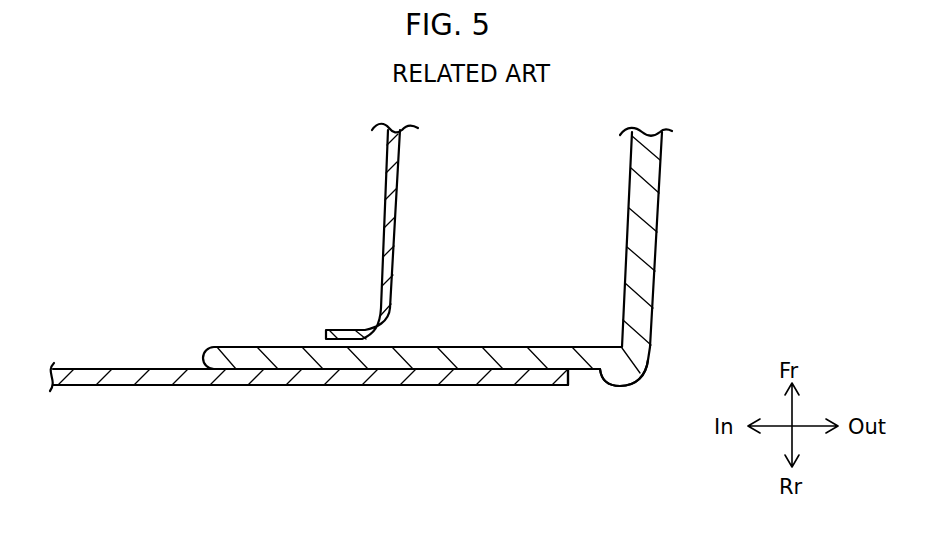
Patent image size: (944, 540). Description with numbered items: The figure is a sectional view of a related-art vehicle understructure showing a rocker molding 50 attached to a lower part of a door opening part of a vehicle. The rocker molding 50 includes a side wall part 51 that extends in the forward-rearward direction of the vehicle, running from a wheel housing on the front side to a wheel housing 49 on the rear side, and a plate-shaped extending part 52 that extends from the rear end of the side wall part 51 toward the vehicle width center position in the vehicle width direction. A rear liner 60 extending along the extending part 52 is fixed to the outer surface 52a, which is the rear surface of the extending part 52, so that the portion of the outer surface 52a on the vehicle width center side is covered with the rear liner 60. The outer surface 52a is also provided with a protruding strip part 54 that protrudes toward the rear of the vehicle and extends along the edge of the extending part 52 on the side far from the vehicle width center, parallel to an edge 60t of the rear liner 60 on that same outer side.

The wheel housing 49 is at (381, 217).
The rocker molding 50 is at (659, 256).
The side wall part 51 is at (651, 202).
The extending part 52 is at (385, 362).
The outer surface 52a is at (487, 367).
The protruding strip part 54 is at (622, 387).
The rear liner 60 is at (312, 381).
The edge of rear liner 60t is at (572, 378).